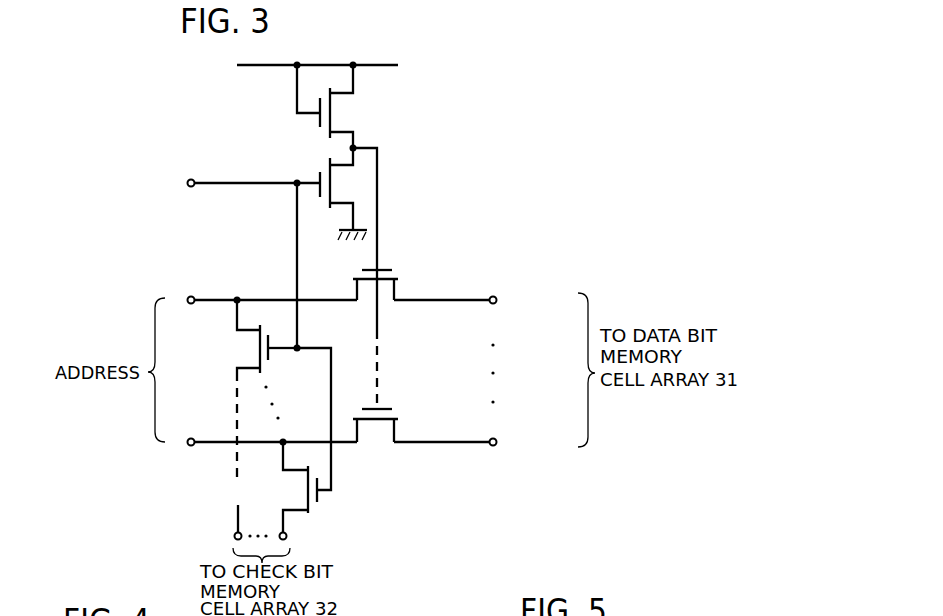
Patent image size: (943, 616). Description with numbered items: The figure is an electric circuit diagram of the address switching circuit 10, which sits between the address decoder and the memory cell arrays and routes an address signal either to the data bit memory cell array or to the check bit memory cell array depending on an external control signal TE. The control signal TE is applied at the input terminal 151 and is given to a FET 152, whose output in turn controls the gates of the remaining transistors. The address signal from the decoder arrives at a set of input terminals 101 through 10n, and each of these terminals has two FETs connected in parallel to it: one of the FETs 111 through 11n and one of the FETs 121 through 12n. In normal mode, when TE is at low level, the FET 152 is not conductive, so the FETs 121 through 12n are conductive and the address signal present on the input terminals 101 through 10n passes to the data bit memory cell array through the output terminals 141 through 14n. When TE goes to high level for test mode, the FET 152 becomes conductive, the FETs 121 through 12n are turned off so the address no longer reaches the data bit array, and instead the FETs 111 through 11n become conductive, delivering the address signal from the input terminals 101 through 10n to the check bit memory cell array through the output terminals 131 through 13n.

The address switching circuit 10 is at (473, 80).
The input terminal 151 is at (194, 179).
The FET 152 is at (319, 182).
The input terminal 101 is at (196, 296).
The FET 111 is at (258, 348).
The input terminal 10n is at (191, 436).
The FET 121 is at (386, 266).
The output terminal 141 is at (493, 295).
The FET 12n is at (384, 410).
The output terminal 14n is at (498, 437).
The FET 11n is at (305, 487).
The output terminal 131 is at (233, 536).
The output terminal 13n is at (289, 535).